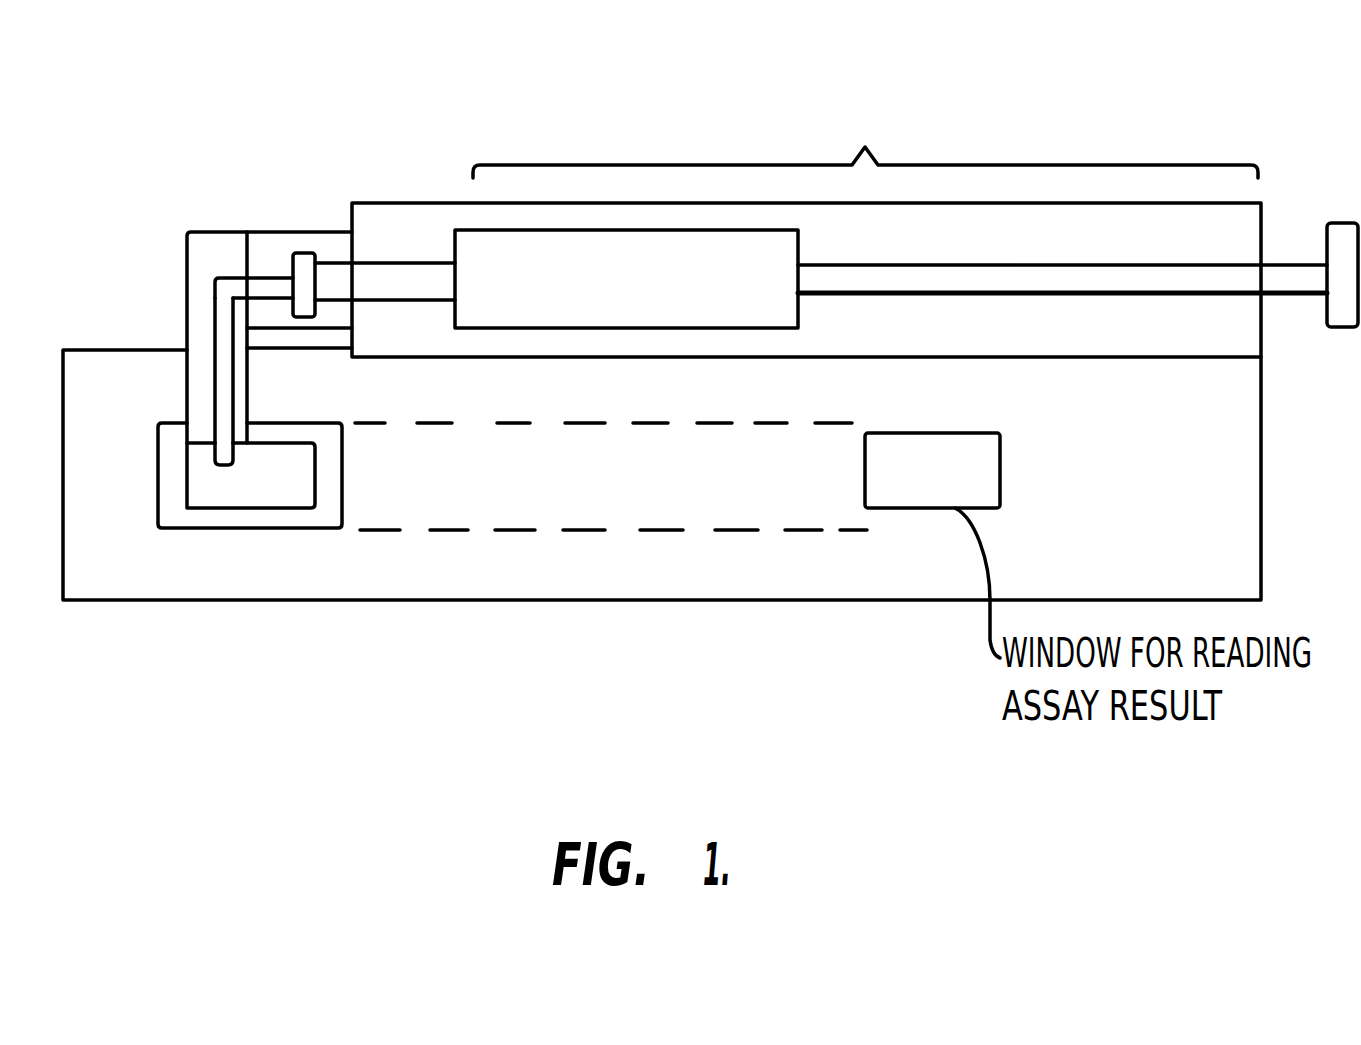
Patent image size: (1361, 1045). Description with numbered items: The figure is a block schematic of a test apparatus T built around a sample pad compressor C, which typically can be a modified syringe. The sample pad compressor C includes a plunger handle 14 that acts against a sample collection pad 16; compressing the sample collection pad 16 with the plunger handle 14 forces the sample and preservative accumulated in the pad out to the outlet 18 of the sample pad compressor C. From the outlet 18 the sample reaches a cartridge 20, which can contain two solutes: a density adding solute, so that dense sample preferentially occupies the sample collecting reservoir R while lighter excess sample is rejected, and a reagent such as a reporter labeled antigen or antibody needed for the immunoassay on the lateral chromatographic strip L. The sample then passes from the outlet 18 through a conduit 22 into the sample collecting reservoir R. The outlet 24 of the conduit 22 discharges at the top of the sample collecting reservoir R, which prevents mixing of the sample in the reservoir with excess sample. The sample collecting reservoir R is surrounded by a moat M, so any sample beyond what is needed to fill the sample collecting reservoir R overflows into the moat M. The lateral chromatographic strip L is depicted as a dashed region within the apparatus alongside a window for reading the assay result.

The test apparatus T is at (456, 111).
The plunger handle 14 is at (1237, 262).
The sample collection pad 16 is at (753, 328).
The outlet 18 is at (412, 275).
The cartridge 20 is at (301, 317).
The conduit 22 is at (220, 370).
The outlet of conduit 24 is at (223, 468).
The sample collecting reservoir R is at (343, 470).
The moat M is at (343, 510).
The lateral chromatographic strip L is at (650, 497).
The sample pad compressor C is at (865, 135).